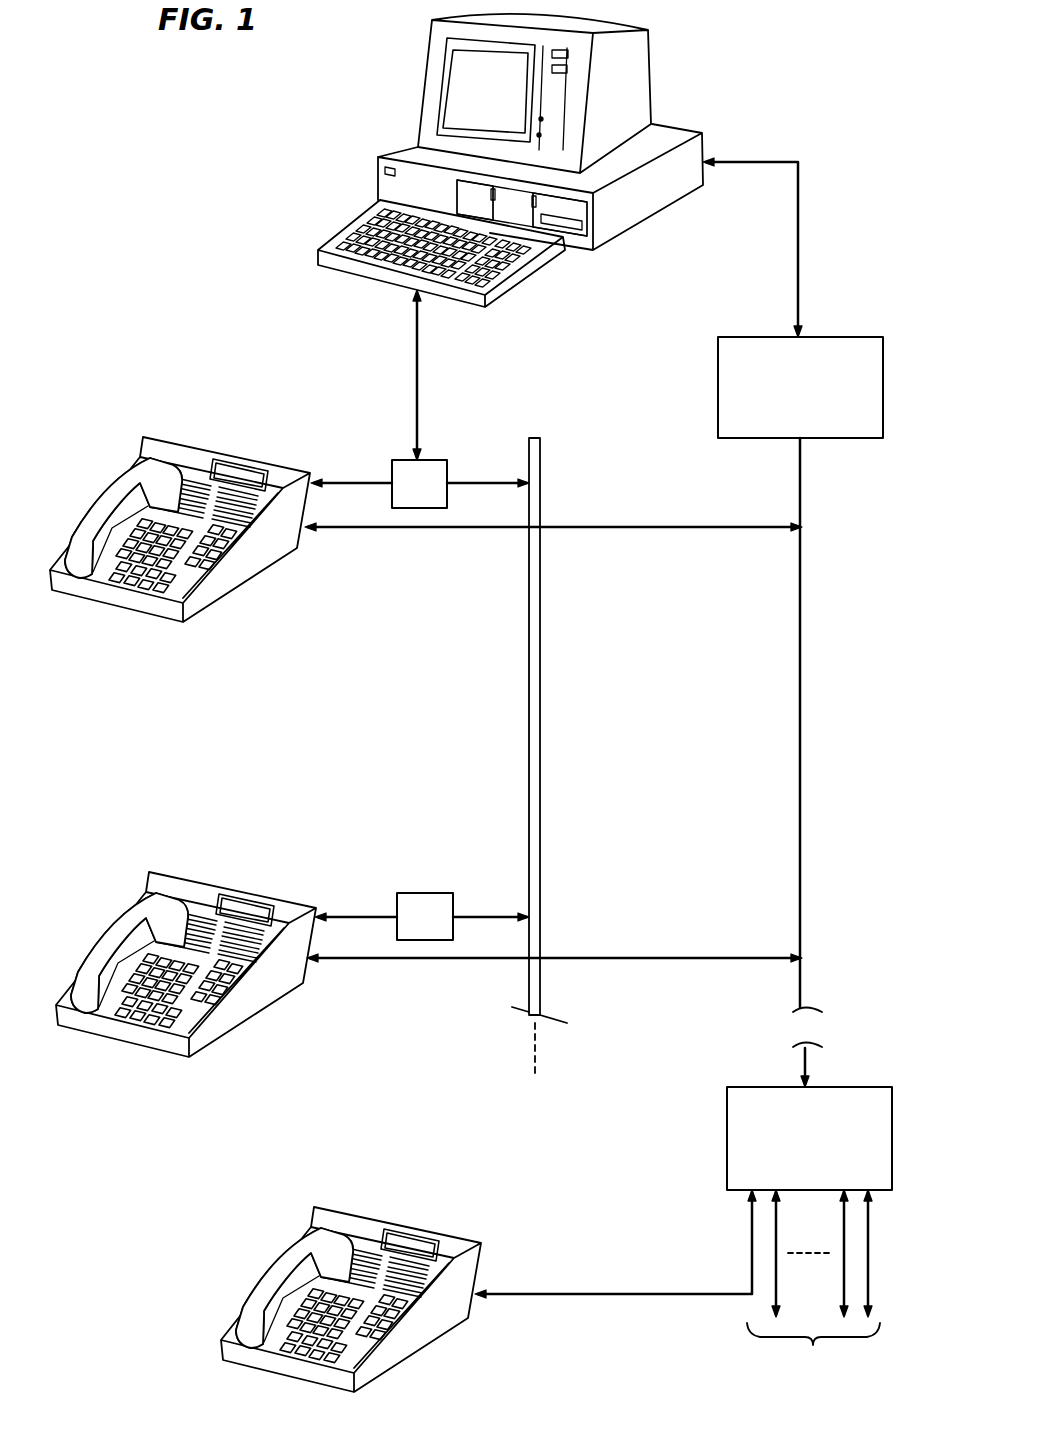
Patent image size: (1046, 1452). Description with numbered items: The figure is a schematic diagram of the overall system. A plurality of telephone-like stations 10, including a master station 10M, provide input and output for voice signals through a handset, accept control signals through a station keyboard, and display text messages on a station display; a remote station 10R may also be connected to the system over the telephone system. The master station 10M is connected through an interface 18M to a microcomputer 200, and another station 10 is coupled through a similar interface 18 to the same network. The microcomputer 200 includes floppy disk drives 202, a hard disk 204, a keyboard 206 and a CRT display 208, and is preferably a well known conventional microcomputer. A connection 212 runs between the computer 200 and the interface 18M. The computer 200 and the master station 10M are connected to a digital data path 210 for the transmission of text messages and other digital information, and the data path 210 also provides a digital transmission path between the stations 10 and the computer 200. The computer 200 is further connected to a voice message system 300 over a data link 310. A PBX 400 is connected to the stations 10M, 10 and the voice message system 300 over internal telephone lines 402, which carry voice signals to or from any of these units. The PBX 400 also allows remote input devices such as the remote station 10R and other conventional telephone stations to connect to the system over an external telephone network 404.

The master station 10M is at (192, 499).
The telephone-like station 10 is at (193, 934).
The remote station 10R is at (363, 1269).
The interface 18M is at (447, 468).
The interface 18 is at (452, 903).
The microcomputer 200 is at (518, 167).
The floppy disk drives 202 is at (470, 200).
The hard disk 204 is at (563, 207).
The keyboard 206 is at (498, 246).
The CRT display 208 is at (457, 83).
The digital data path 210 is at (540, 472).
The computer link 212 is at (417, 381).
The voice message system 300 is at (863, 336).
The data link 310 is at (800, 223).
The PBX 400 is at (868, 1087).
The internal telephone lines 402 is at (665, 529).
The external telephone network 404 is at (677, 1285).